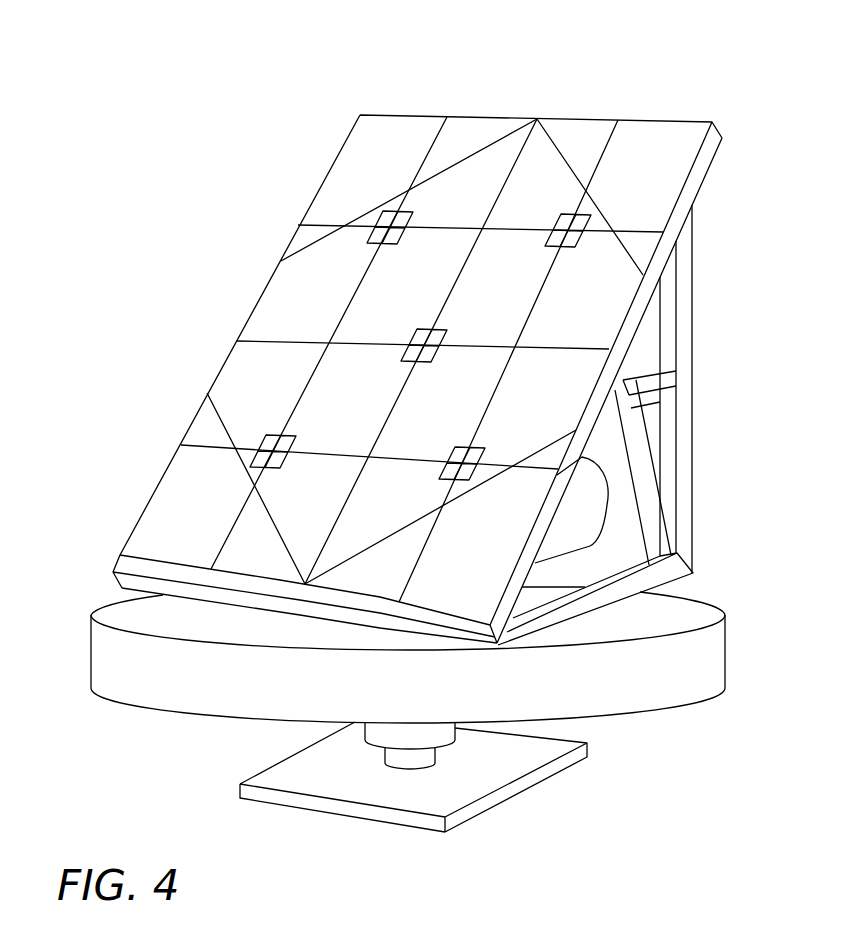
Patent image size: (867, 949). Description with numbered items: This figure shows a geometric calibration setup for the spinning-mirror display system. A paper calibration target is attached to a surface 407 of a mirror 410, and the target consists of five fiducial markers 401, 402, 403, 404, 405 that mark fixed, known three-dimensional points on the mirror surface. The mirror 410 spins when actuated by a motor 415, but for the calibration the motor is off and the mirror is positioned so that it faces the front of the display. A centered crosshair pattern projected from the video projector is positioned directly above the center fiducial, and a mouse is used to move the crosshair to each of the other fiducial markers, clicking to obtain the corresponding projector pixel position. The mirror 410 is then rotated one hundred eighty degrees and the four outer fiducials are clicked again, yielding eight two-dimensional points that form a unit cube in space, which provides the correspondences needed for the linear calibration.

The fiducial marker 401 is at (393, 213).
The fiducial marker 402 is at (558, 215).
The fiducial marker 403 is at (415, 330).
The fiducial marker 404 is at (268, 441).
The fiducial marker 405 is at (458, 462).
The surface 407 is at (527, 180).
The mirror 410 is at (688, 122).
The motor 415 is at (673, 660).